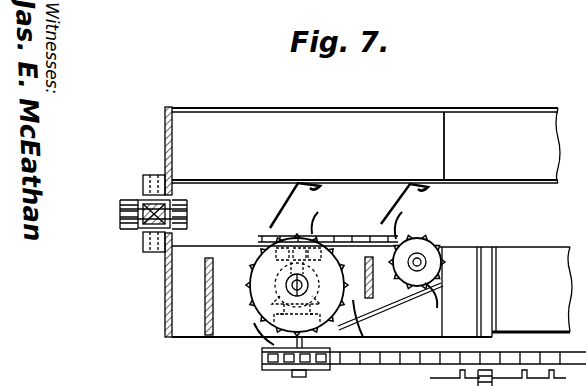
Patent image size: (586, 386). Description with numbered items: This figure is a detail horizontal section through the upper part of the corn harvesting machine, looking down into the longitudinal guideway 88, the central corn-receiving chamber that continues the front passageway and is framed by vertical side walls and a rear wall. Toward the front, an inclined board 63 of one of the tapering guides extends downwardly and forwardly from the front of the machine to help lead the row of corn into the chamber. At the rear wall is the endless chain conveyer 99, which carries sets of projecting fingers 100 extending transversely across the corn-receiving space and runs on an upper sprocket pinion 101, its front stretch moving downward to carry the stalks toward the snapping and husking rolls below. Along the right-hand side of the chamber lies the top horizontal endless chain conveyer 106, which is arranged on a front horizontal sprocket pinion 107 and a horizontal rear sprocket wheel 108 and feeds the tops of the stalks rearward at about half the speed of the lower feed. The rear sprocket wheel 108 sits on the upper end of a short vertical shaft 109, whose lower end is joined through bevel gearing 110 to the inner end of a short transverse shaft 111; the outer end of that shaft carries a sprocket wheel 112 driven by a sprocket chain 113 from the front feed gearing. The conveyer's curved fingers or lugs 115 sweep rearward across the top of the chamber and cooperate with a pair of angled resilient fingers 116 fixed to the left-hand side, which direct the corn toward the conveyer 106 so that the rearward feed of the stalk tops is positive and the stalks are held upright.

The inclined board 63 is at (520, 101).
The longitudinal guideway 88 is at (490, 164).
The endless chain conveyer 99 is at (148, 211).
The projecting fingers 100 is at (178, 200).
The upper sprocket pinion 101 is at (148, 222).
The top horizontal endless chain conveyer 106 is at (263, 255).
The front horizontal sprocket pinion 107 is at (432, 248).
The rear sprocket wheel 108 is at (262, 303).
The short vertical shaft 109 is at (289, 285).
The bevel gearing 110 is at (312, 290).
The short transverse shaft 111 is at (304, 370).
The sprocket wheel 112 is at (294, 361).
The sprocket chain 113 is at (372, 366).
The fingers or lugs 115 is at (401, 216).
The resilient fingers 116 is at (285, 198).